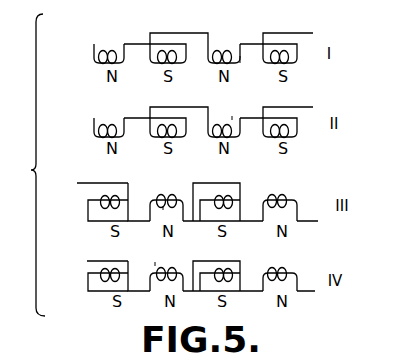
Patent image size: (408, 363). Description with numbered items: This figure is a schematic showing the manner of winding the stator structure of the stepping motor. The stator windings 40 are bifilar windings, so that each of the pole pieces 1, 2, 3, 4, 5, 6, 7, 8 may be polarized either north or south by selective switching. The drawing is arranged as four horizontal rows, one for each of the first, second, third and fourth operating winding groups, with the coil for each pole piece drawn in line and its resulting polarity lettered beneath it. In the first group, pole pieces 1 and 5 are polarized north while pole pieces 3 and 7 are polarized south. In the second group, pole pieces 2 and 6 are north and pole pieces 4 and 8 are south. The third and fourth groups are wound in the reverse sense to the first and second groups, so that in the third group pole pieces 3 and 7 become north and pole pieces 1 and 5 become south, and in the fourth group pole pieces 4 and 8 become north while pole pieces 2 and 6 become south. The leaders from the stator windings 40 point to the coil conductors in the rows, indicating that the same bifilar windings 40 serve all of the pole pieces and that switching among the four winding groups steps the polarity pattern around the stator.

The pole piece 1 is at (102, 121).
The pole piece 2 is at (107, 191).
The pole piece 3 is at (168, 117).
The pole piece 4 is at (168, 189).
The pole piece 5 is at (220, 120).
The pole piece 6 is at (220, 190).
The pole piece 7 is at (280, 116).
The pole piece 8 is at (280, 188).
The stator windings 40 is at (233, 117).